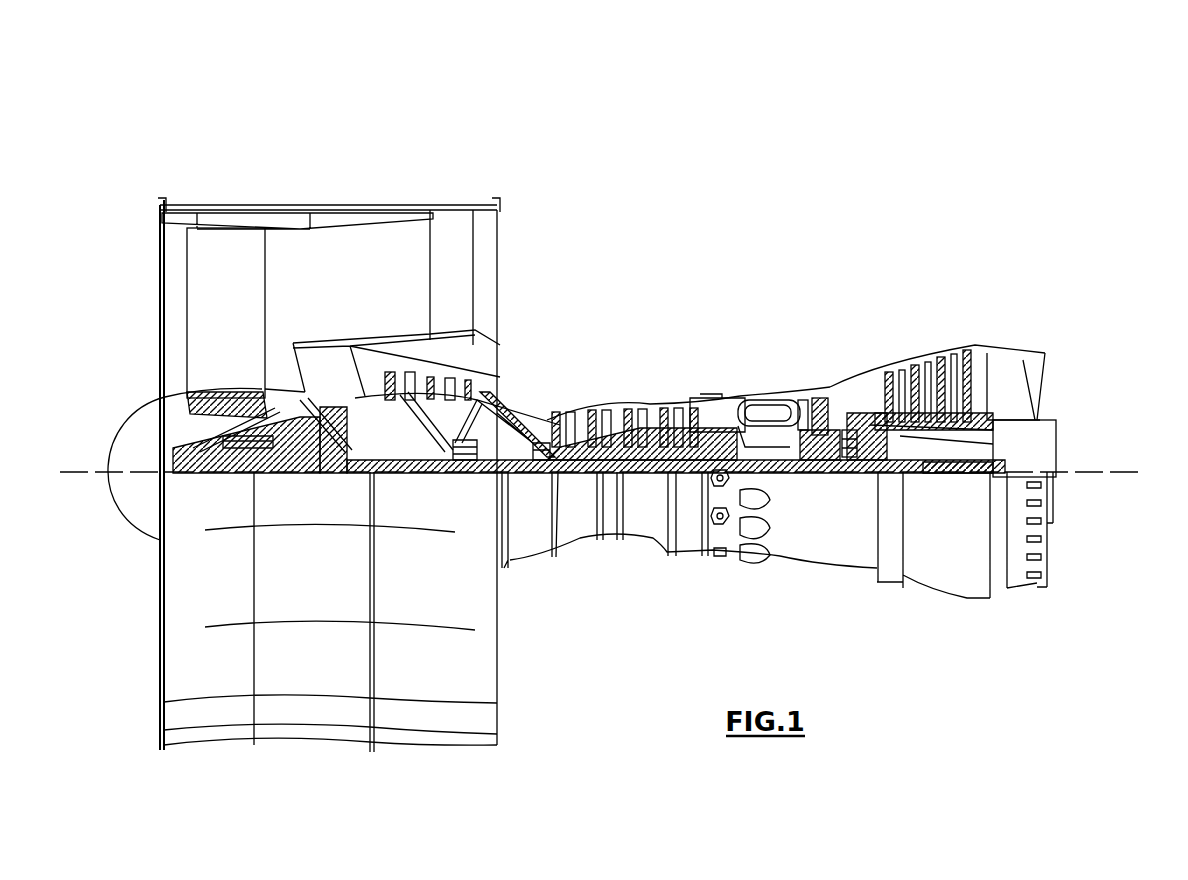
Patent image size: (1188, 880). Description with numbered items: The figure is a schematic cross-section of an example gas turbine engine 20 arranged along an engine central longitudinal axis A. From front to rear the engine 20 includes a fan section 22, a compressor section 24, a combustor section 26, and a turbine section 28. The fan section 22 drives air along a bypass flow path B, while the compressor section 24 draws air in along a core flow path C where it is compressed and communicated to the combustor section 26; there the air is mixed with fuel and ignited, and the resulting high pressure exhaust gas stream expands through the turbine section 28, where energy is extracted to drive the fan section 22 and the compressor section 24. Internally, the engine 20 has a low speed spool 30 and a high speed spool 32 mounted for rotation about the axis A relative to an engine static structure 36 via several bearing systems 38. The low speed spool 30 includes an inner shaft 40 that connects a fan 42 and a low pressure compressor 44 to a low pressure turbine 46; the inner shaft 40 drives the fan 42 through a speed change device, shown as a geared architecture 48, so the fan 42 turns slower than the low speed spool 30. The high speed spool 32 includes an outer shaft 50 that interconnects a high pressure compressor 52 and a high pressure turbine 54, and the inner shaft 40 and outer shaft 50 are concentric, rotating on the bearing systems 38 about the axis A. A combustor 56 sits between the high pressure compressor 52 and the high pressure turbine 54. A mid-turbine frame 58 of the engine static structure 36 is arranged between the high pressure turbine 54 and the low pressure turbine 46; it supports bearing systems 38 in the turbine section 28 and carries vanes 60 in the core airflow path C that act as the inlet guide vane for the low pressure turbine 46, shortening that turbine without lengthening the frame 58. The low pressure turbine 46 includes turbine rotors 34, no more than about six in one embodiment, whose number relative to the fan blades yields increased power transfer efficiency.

The gas turbine engine 20 is at (763, 250).
The fan section 22 is at (262, 198).
The compressor section 24 is at (547, 385).
The combustor section 26 is at (757, 372).
The turbine section 28 is at (895, 338).
The low speed spool 30 is at (650, 480).
The high speed spool 32 is at (693, 430).
The turbine rotors 34 is at (973, 430).
The engine static structure 36 is at (686, 560).
The bearing systems 38 is at (262, 473).
The inner shaft 40 is at (520, 475).
The fan 42 is at (210, 326).
The low pressure compressor section 44 is at (438, 383).
The low pressure turbine section 46 is at (940, 370).
The geared architecture 48 is at (345, 462).
The outer shaft 50 is at (770, 473).
The high pressure compressor section 52 is at (590, 413).
The high pressure turbine section 54 is at (860, 387).
The combustor 56 is at (757, 418).
The mid-turbine frame 58 is at (853, 407).
The vanes 60 is at (883, 437).
The engine central longitudinal axis A is at (1133, 472).
The bypass flow path B is at (385, 277).
The core flow path C is at (335, 376).